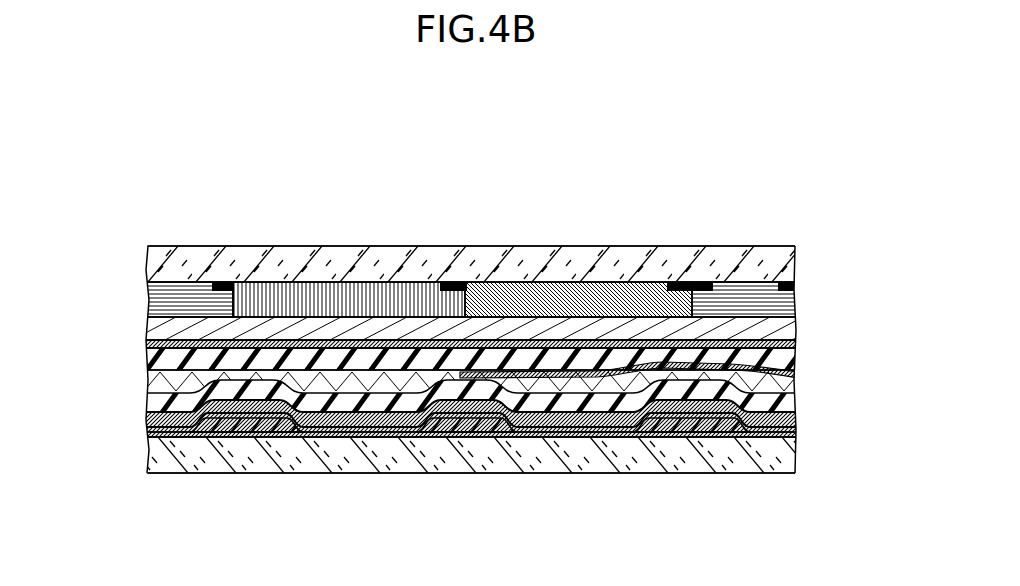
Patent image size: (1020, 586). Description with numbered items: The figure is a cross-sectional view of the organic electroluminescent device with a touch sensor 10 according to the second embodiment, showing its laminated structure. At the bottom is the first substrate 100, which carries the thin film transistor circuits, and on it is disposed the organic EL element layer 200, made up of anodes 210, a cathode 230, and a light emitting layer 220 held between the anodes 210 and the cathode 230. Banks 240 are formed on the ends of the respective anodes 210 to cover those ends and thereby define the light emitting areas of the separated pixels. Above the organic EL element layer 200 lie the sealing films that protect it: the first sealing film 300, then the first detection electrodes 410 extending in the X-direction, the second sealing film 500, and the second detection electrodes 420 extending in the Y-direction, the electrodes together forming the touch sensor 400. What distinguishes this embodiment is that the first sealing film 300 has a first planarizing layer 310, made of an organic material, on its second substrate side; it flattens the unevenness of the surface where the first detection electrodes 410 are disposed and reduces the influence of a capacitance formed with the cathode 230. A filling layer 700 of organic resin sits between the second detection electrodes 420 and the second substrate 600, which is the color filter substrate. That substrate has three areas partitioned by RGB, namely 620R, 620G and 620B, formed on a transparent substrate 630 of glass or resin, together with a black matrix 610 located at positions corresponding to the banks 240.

The organic electroluminescent device with a touch sensor 10 is at (675, 187).
The first substrate 100 is at (772, 455).
The organic EL element layer 200 is at (880, 413).
The anodes 210 is at (798, 436).
The light emitting layer 220 is at (798, 428).
The cathode 230 is at (797, 413).
The banks 240 is at (272, 430).
The first sealing film 300 is at (150, 400).
The first planarizing layer 310 is at (153, 385).
The touch sensor 400 is at (540, 196).
The first detection electrodes 410 is at (595, 370).
The second detection electrodes 420 is at (427, 345).
The second sealing film 500 is at (153, 360).
The second substrate 600 is at (147, 318).
The black matrix 610 is at (701, 289).
The blue area 620B is at (178, 295).
The red area 620R is at (322, 303).
The green area 620G is at (620, 298).
The transparent substrate 630 is at (798, 262).
The filling layer 700 is at (798, 333).